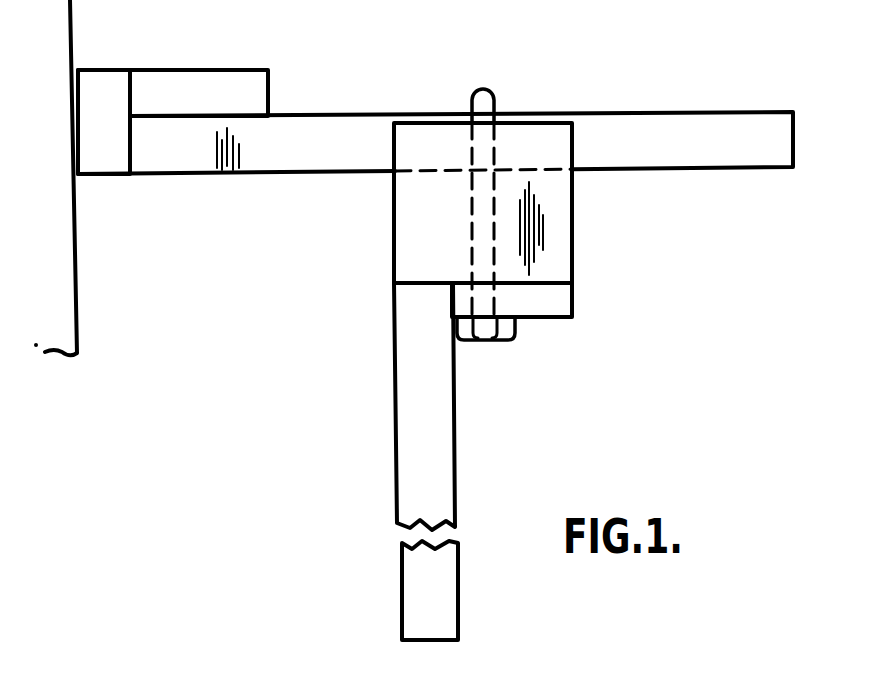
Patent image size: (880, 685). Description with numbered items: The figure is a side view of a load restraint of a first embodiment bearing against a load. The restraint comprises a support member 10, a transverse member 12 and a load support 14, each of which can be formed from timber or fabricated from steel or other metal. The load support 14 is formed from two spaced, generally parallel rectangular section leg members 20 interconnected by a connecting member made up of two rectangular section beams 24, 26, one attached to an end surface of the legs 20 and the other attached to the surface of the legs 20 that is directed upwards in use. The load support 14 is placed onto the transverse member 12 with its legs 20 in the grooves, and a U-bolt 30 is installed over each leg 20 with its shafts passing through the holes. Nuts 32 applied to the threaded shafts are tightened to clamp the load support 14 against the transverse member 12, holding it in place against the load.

The support member 10 is at (410, 487).
The transverse member 12 is at (573, 265).
The load support 14 is at (352, 92).
The leg member 20 is at (731, 128).
The rectangular section beam 24 is at (234, 68).
The rectangular section beam 26 is at (113, 176).
The U-bolt 30 is at (471, 108).
The nut 32 is at (497, 341).